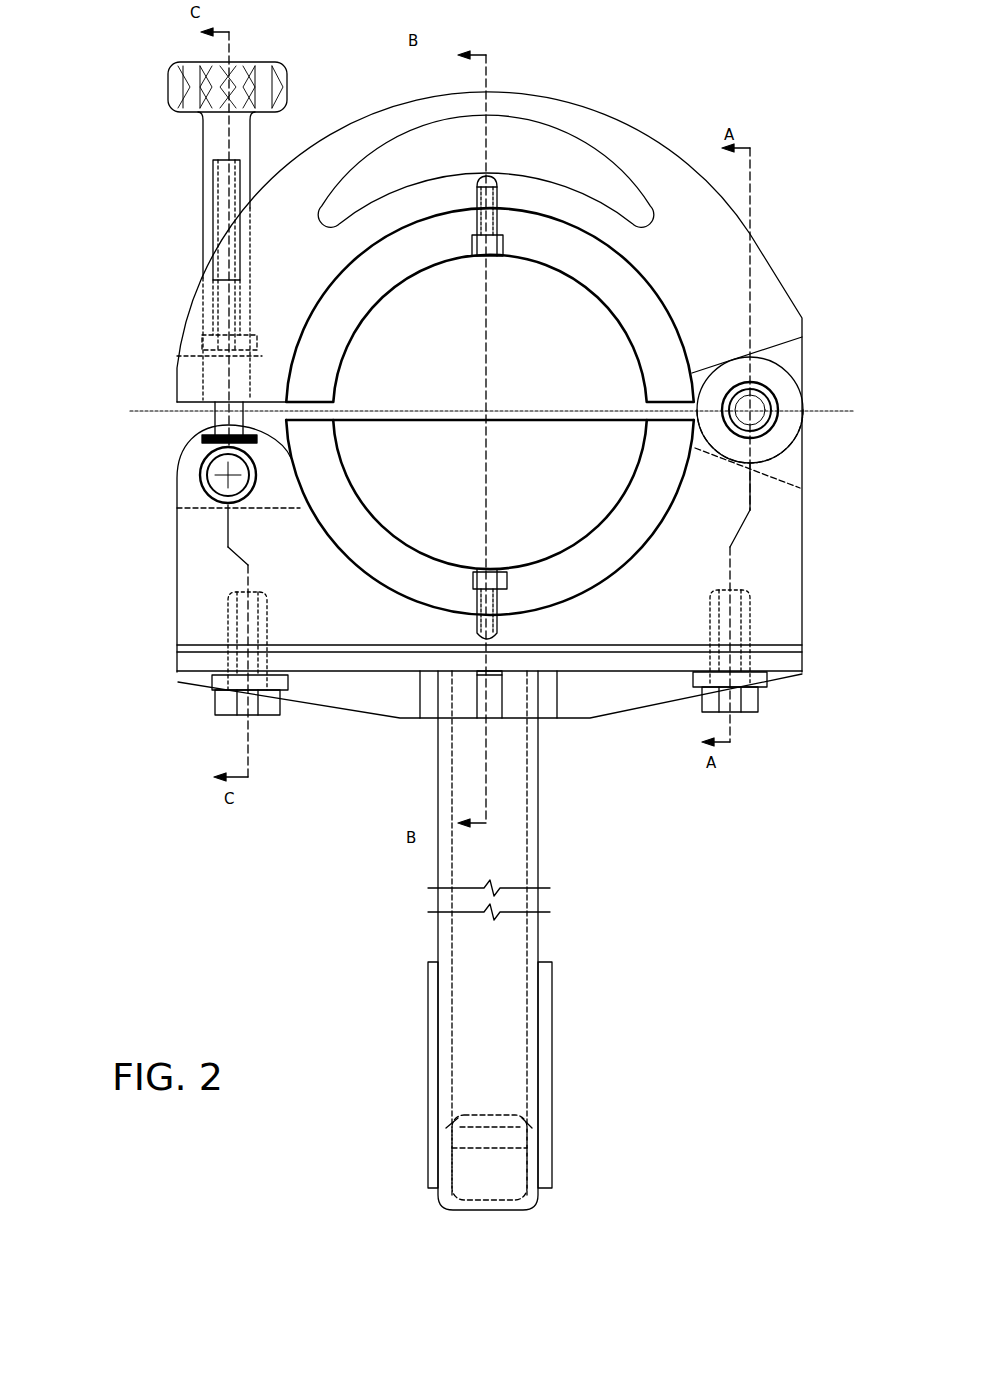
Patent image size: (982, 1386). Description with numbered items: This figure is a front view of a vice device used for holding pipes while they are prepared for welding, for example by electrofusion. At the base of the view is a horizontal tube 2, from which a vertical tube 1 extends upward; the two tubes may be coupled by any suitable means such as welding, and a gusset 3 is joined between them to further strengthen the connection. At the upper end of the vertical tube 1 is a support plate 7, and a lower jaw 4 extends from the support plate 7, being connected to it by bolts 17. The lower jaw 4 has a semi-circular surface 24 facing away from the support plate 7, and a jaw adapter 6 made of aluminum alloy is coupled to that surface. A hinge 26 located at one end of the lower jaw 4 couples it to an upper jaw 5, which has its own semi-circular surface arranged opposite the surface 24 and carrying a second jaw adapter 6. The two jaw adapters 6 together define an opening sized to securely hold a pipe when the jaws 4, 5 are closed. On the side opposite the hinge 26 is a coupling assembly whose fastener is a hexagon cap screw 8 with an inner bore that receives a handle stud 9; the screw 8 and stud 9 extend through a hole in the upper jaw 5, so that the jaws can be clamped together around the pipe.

The vertical tube 1 is at (440, 945).
The horizontal tube 2 is at (452, 1203).
The gusset 3 is at (428, 1045).
The lower jaw 4 is at (178, 555).
The upper jaw 5 is at (572, 110).
The jaw adapter 6 is at (578, 282).
The support plate 7 is at (360, 672).
The hexagon cap screw 8 is at (203, 187).
The handle stud 9 is at (212, 421).
The bolts 17 is at (218, 715).
The semi-circular surface 24 is at (358, 573).
The hinge 26 is at (773, 398).